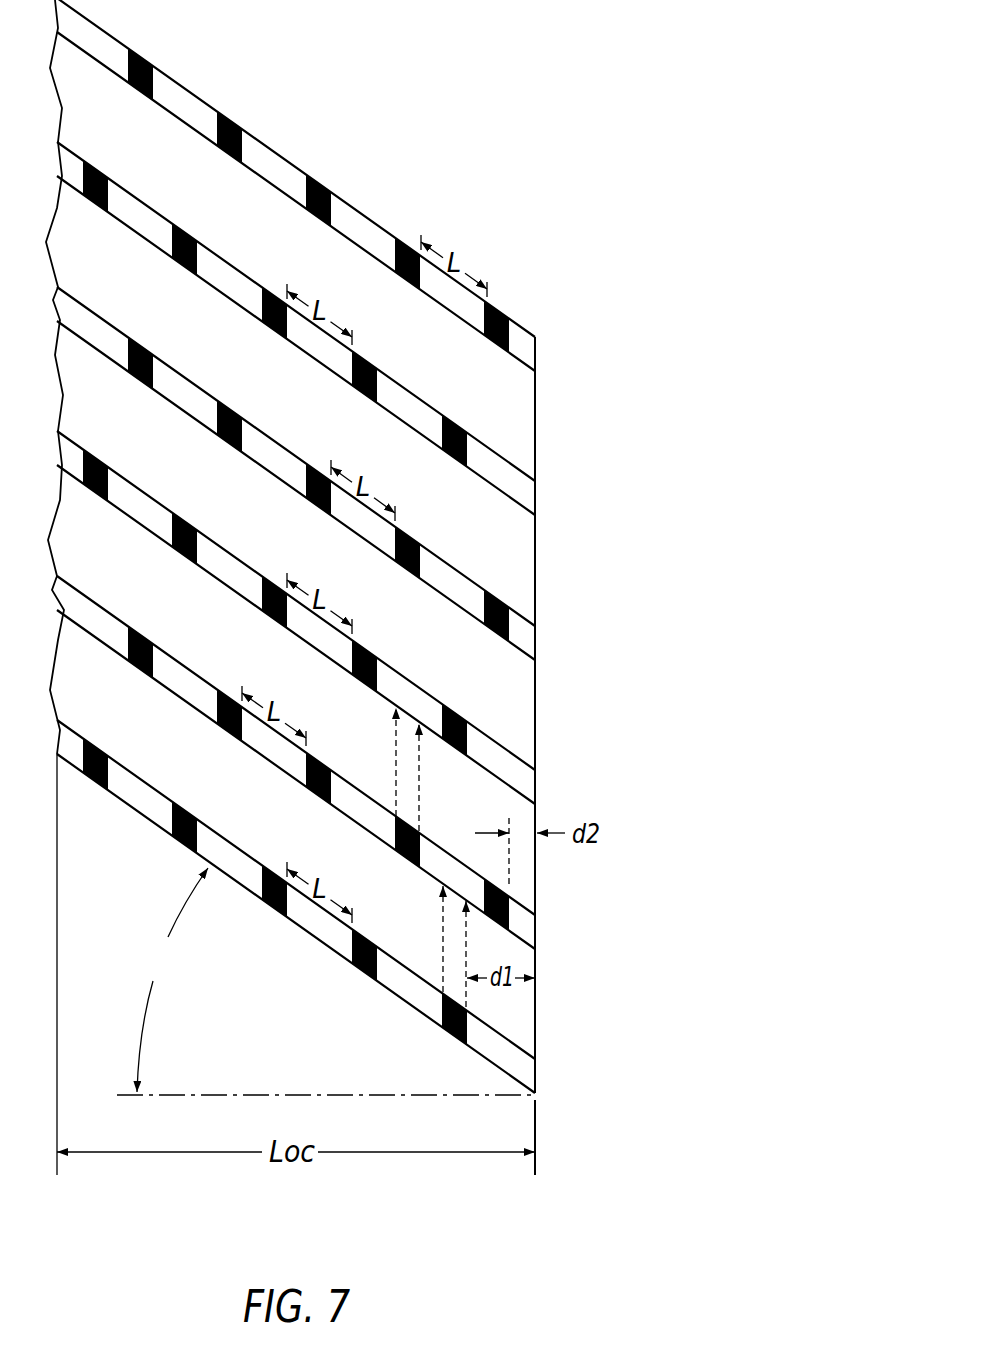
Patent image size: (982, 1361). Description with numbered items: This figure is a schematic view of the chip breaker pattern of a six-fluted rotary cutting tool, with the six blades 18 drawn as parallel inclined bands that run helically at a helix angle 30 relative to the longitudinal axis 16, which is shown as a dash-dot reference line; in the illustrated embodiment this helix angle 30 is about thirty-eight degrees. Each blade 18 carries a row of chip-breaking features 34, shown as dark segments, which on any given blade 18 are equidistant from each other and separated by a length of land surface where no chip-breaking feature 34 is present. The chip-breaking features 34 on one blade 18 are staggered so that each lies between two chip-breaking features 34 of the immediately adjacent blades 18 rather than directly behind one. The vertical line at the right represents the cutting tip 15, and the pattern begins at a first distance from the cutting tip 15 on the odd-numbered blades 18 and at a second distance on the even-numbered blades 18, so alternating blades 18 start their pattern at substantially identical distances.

The blade 18 is at (536, 352).
The chip-breaking feature 34 is at (502, 309).
The cutting tip 15 is at (536, 447).
The longitudinal axis 16 is at (124, 1096).
The helix angle 30 is at (172, 980).